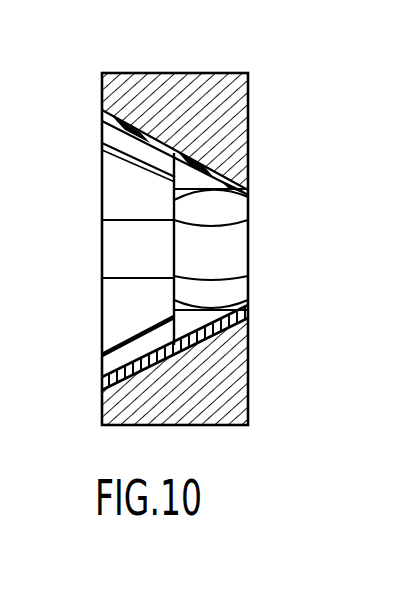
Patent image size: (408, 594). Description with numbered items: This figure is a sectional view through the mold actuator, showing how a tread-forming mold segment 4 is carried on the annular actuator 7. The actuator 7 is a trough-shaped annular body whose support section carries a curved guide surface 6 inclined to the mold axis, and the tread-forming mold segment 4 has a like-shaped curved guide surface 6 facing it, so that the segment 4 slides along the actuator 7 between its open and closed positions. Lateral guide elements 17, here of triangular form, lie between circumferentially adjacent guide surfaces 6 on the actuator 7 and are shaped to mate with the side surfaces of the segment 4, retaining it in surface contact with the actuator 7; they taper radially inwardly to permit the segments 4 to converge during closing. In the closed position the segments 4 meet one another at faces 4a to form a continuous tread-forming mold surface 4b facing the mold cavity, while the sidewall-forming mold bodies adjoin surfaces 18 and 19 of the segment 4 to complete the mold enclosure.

The actuator 7 is at (197, 242).
The lateral guide element 17 is at (148, 255).
The guide surface 6 is at (118, 249).
The surface 18 is at (154, 249).
The tread-forming mold segment 4 is at (248, 252).
The face 4a is at (242, 252).
The continuous tread-forming mold surface 4b is at (248, 250).
The surface 19 is at (197, 371).